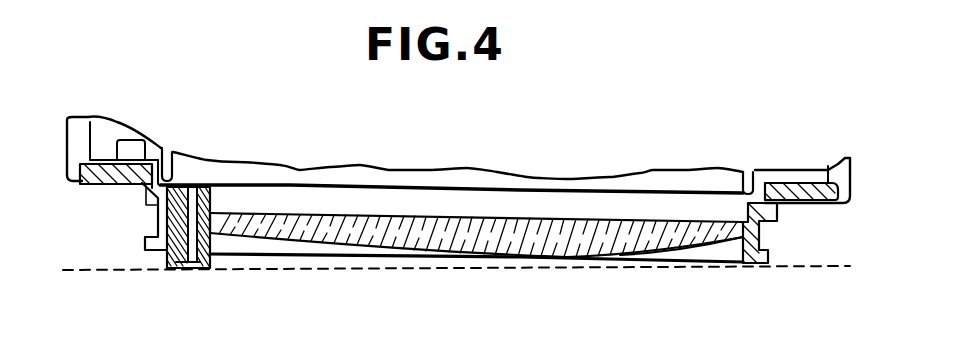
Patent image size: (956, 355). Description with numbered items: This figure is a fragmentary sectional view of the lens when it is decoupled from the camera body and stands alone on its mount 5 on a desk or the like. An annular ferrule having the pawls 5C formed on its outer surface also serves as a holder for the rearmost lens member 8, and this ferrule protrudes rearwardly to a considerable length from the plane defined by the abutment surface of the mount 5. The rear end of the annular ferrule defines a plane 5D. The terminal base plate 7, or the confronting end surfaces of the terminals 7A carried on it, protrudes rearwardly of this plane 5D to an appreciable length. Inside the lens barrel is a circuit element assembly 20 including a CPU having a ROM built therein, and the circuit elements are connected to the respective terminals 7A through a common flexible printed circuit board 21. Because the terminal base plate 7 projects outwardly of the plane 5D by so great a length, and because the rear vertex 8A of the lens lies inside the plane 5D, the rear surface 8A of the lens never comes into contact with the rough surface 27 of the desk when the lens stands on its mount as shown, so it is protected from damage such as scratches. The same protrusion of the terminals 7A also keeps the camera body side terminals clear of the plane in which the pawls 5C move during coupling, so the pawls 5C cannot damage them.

The lens side mount 5 is at (853, 189).
The pawls 5C is at (762, 308).
The plane 5D is at (313, 256).
The terminal base plate 7 is at (170, 270).
The terminals 7A is at (198, 263).
The rearmost lens member 8 is at (546, 246).
The rear vertex of the lens 8A is at (669, 254).
The circuit element assembly 20 is at (131, 139).
The flexible printed circuit board 21 is at (108, 146).
The rough surface 27 is at (832, 268).